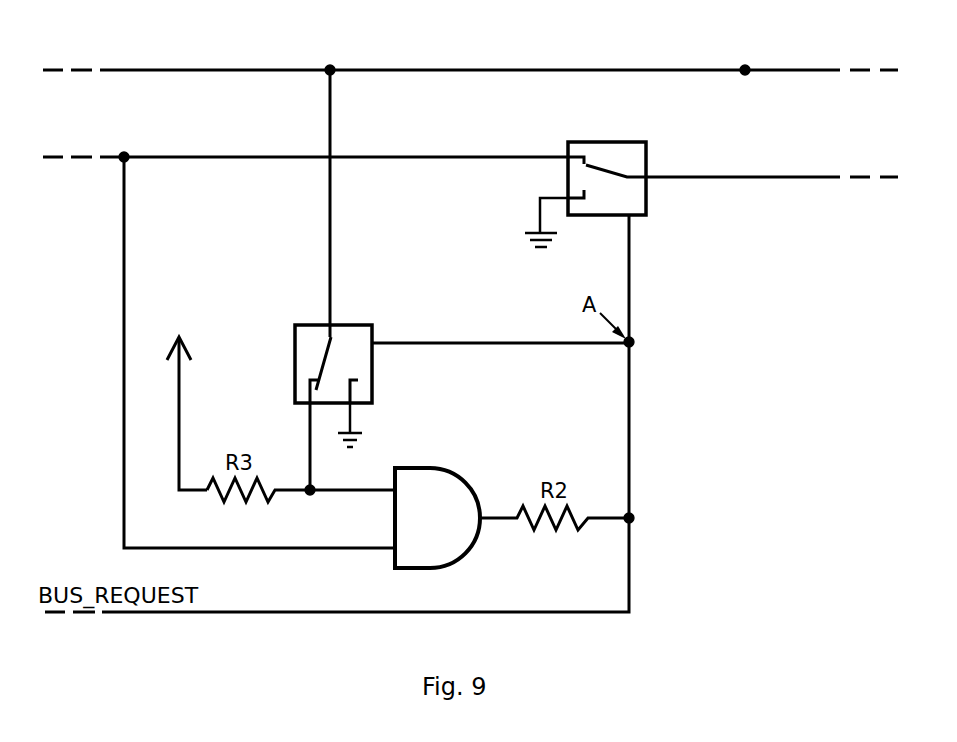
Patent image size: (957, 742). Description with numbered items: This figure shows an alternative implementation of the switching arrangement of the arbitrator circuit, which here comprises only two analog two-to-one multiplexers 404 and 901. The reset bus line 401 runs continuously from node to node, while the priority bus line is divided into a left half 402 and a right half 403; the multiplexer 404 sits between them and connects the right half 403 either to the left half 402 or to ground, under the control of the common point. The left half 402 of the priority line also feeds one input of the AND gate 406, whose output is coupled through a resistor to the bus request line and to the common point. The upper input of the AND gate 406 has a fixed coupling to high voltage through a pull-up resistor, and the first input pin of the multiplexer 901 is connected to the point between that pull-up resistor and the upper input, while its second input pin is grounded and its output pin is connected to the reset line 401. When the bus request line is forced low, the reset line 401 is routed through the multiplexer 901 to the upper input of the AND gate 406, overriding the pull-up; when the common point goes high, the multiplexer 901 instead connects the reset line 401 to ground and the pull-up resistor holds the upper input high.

The RES line 401 is at (365, 70).
The left half of the PRI line 402 is at (365, 157).
The right half of the PRI line 403 is at (770, 177).
The analog two-to-one multiplexer 404 is at (598, 142).
The AND gate 406 is at (420, 468).
The analog two-to-one multiplexer 901 is at (372, 333).